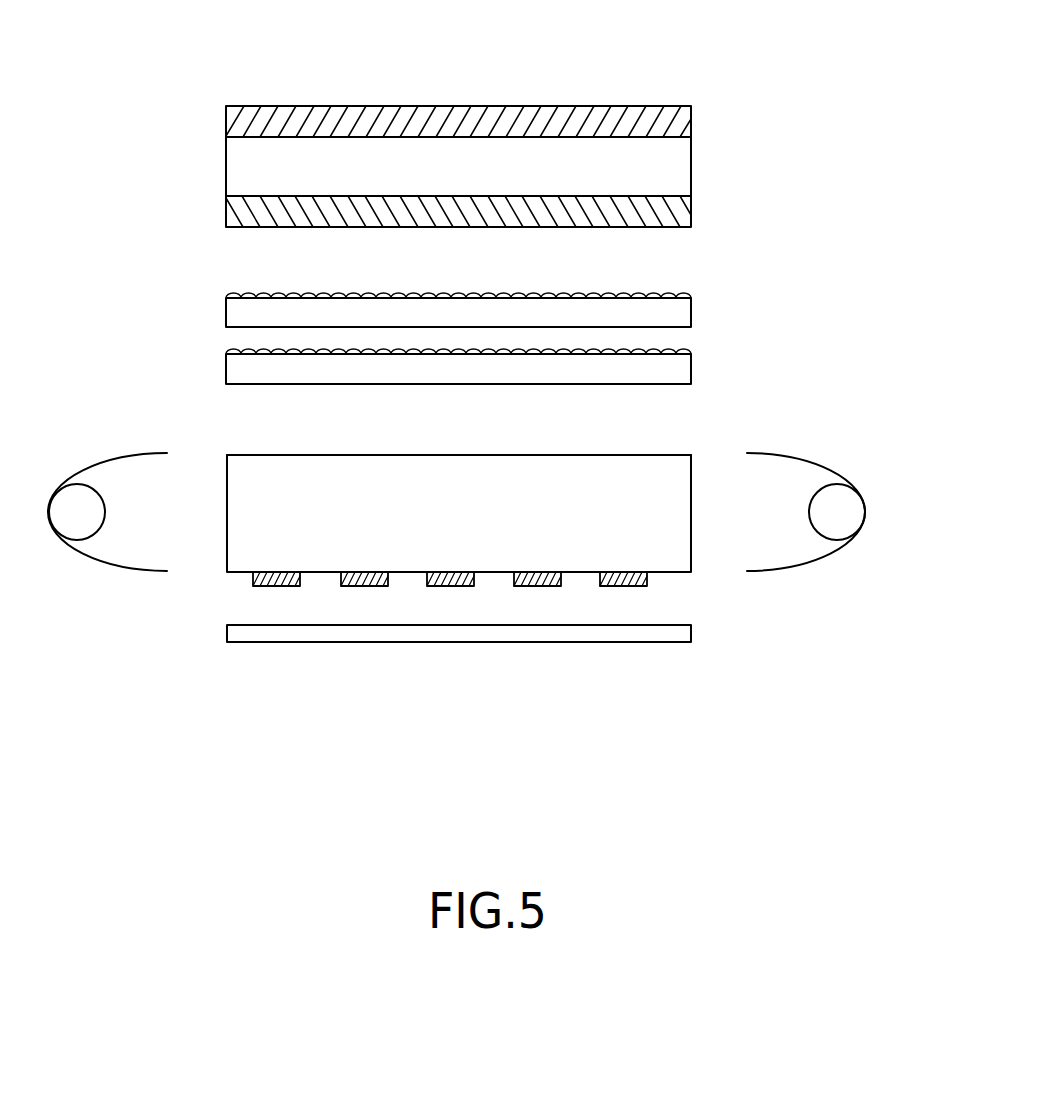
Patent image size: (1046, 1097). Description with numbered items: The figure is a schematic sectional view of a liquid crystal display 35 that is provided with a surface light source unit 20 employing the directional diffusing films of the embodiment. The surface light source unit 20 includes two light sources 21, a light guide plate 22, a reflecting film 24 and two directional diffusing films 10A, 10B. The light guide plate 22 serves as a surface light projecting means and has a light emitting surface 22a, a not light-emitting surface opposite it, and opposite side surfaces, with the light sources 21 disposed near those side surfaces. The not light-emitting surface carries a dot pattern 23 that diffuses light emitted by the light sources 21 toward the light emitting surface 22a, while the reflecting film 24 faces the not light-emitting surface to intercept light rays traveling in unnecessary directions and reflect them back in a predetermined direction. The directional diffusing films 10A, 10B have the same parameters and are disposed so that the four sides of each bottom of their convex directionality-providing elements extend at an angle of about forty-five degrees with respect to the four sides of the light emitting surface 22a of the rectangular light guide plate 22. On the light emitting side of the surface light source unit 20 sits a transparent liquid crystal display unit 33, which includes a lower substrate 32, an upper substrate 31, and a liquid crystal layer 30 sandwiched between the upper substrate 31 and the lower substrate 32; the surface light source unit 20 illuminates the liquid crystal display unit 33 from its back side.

The liquid crystal display 35 is at (645, 58).
The liquid crystal display unit 33 is at (523, 162).
The upper substrate 31 is at (691, 121).
The liquid crystal layer 30 is at (685, 167).
The lower substrate 32 is at (493, 211).
The directional diffusing film 10A is at (686, 313).
The directional diffusing film 10B is at (686, 366).
The surface light source unit 20 is at (484, 508).
The light source 21 is at (76, 520).
The light guide plate 22 is at (243, 560).
The light emitting surface 22a is at (303, 457).
The dot pattern 23 is at (362, 588).
The reflecting film 24 is at (468, 633).